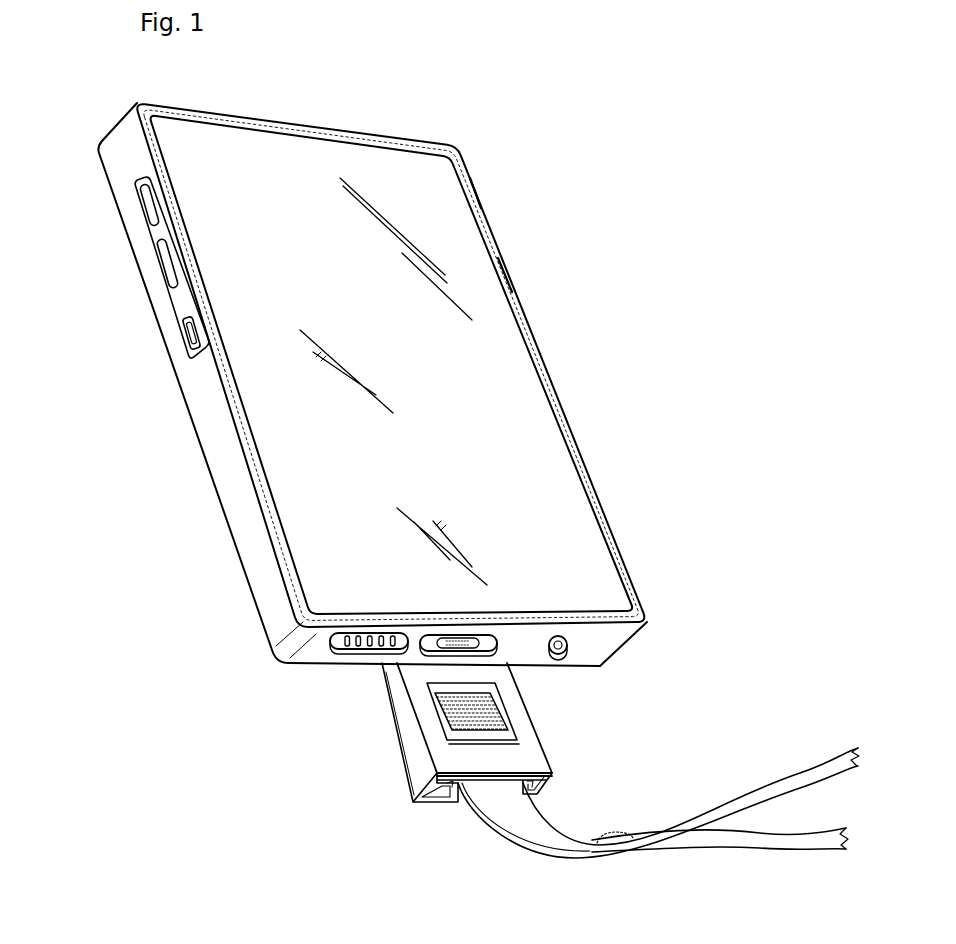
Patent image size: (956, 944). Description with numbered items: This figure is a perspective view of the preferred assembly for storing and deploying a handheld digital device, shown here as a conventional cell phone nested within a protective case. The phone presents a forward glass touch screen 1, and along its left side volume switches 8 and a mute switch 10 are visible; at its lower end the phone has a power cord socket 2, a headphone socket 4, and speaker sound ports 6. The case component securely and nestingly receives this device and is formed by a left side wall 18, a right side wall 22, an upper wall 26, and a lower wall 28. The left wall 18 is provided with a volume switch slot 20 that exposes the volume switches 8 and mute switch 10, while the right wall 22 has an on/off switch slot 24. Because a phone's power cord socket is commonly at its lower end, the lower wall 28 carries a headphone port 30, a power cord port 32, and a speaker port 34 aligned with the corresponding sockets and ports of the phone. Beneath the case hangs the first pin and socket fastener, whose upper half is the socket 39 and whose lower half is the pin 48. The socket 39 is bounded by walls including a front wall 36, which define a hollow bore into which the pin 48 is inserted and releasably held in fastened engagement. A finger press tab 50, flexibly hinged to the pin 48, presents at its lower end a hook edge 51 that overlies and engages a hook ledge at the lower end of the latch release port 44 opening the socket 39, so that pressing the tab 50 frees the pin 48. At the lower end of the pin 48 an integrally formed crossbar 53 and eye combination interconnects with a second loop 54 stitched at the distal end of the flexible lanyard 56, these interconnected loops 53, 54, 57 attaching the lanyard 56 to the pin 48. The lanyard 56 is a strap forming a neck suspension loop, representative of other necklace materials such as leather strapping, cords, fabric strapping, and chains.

The glass touch screen 1 is at (513, 393).
The power cord socket 2 is at (427, 641).
The headphone socket 4 is at (567, 650).
The speaker sound ports 6 is at (367, 642).
The volume switches 8 is at (170, 265).
The mute switch 10 is at (190, 330).
The left side wall 18 is at (213, 437).
The volume switch slot 20 is at (180, 303).
The right side wall 22 is at (540, 336).
The on/off switch slot 24 is at (509, 281).
The upper wall 26 is at (358, 127).
The lower wall 28 is at (598, 648).
The headphone port 30 is at (558, 654).
The power cord port 32 is at (498, 648).
The speaker port 34 is at (337, 650).
The front wall 36 is at (410, 740).
The socket 39 is at (393, 772).
The latch release port 44 is at (440, 750).
The pin 48 is at (530, 786).
The finger press tab 50 is at (493, 718).
The hook edge 51 is at (490, 740).
The crossbar 53 is at (457, 787).
The second loop 54 is at (553, 857).
The lanyard 56 is at (798, 770).
The loop pair element 57 is at (588, 852).